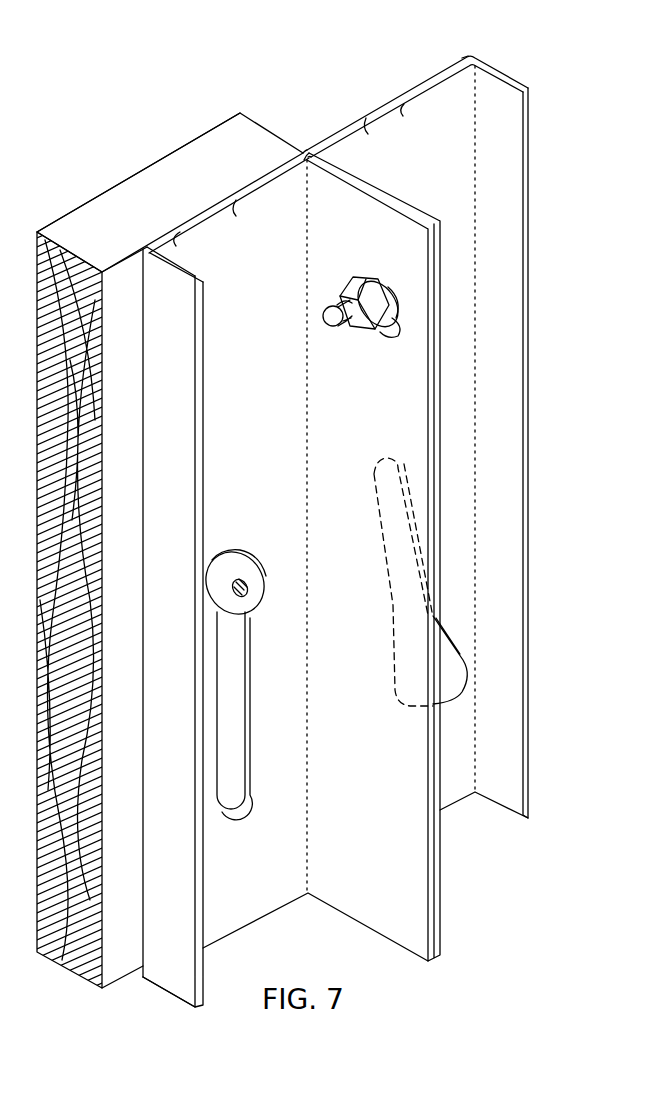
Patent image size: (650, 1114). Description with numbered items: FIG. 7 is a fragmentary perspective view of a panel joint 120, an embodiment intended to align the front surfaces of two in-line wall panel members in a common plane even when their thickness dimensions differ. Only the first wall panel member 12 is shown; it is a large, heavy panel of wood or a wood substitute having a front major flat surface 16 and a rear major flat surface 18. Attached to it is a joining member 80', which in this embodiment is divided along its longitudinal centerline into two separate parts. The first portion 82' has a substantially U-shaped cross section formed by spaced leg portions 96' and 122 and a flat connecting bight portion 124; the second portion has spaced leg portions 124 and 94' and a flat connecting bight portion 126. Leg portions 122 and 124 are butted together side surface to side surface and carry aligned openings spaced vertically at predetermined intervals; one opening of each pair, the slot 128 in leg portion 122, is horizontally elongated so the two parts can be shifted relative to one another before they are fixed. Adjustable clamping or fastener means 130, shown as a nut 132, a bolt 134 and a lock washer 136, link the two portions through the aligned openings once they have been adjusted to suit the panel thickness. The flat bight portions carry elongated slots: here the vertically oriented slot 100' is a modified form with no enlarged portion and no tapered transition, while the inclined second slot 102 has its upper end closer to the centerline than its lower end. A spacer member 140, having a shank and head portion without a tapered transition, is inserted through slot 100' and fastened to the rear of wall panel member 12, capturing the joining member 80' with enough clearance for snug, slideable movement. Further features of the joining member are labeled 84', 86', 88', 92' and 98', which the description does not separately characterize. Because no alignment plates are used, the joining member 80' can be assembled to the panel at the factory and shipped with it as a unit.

The wall panel member 12 is at (201, 135).
The front major flat surface 16 is at (132, 176).
The rear major flat surface 18 is at (125, 268).
The joining member 80' is at (127, 613).
The first portion of joining member 82' is at (229, 205).
The first bend of first channel member 84' is at (168, 248).
The second bend of first channel member 86' is at (165, 215).
The third bend of first channel member 88' is at (205, 200).
The flange of first channel member 92' is at (189, 641).
The leg portion 96' is at (155, 924).
The slot 100' is at (255, 716).
The panel joint 120 is at (143, 362).
The leg portion 122 is at (330, 485).
The leg portion 124 is at (280, 187).
The spacer member 140 is at (252, 594).
The flat connecting bight portion 126 is at (460, 82).
The leg portion 94' is at (503, 442).
The flange of second channel member 98' is at (540, 453).
The second elongated slot 102 is at (468, 615).
The adjustable clamping or fastener means 130 is at (364, 312).
The nut 132 is at (362, 275).
The bolt 134 is at (333, 326).
The lock washer 136 is at (386, 298).
The horizontally elongated slot 128 is at (404, 330).